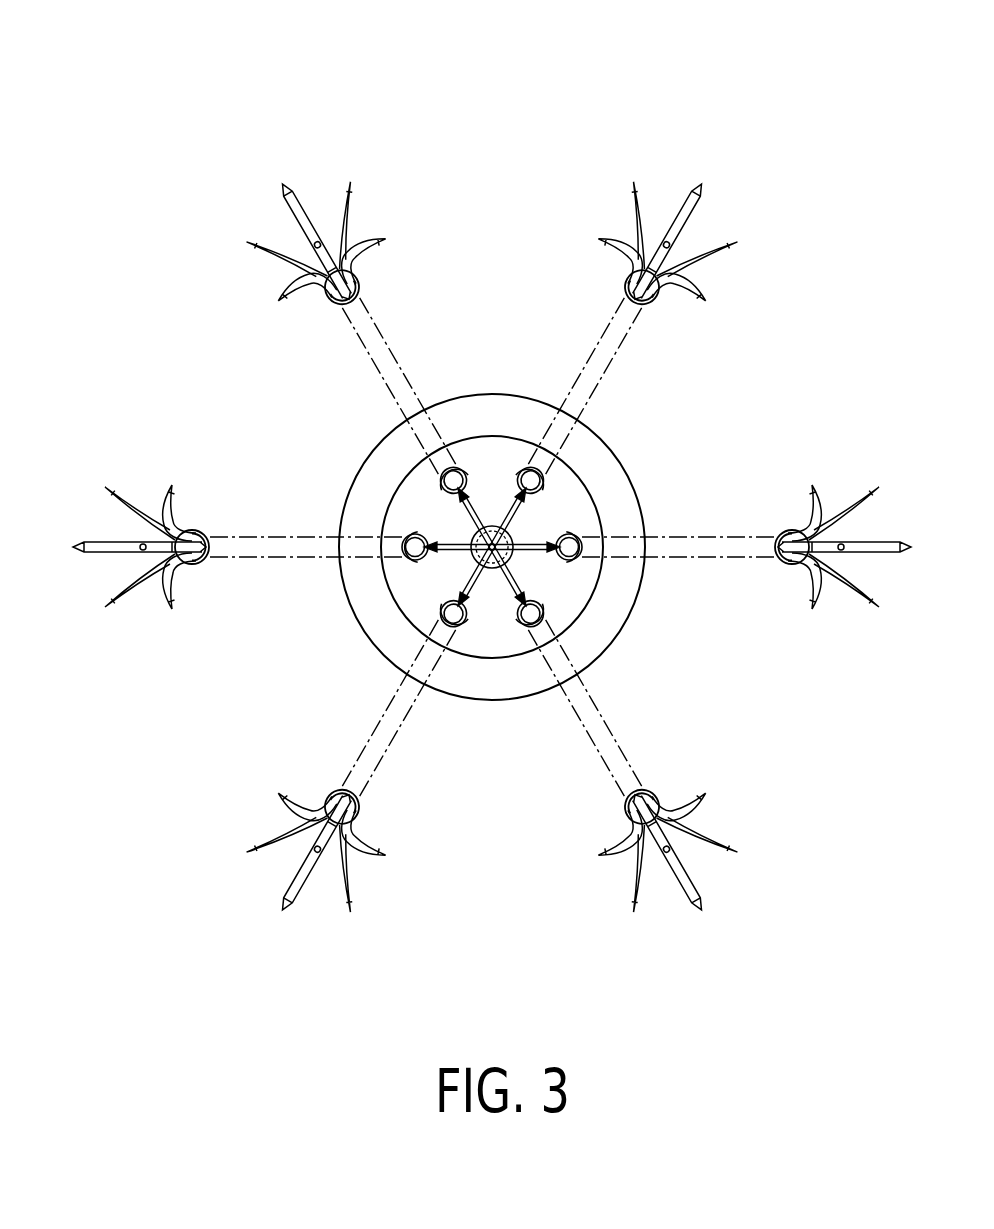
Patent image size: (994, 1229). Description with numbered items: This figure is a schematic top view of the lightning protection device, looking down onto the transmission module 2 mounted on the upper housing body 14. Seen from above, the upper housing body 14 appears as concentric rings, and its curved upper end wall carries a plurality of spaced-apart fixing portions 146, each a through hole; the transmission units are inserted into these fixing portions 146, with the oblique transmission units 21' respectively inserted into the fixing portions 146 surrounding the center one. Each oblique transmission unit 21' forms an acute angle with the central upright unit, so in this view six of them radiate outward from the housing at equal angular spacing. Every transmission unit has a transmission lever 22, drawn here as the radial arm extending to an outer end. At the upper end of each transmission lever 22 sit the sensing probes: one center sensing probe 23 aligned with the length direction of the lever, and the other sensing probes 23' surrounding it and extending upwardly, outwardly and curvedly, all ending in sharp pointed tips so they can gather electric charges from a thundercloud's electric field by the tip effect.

The transmission module 2 is at (250, 100).
The upper housing body 14 is at (585, 487).
The fixing portions 146 is at (413, 545).
The oblique transmission units 21' is at (473, 517).
The transmission lever 22 is at (362, 342).
The sensing probe 23 is at (473, 517).
The sensing probes 23' is at (492, 547).